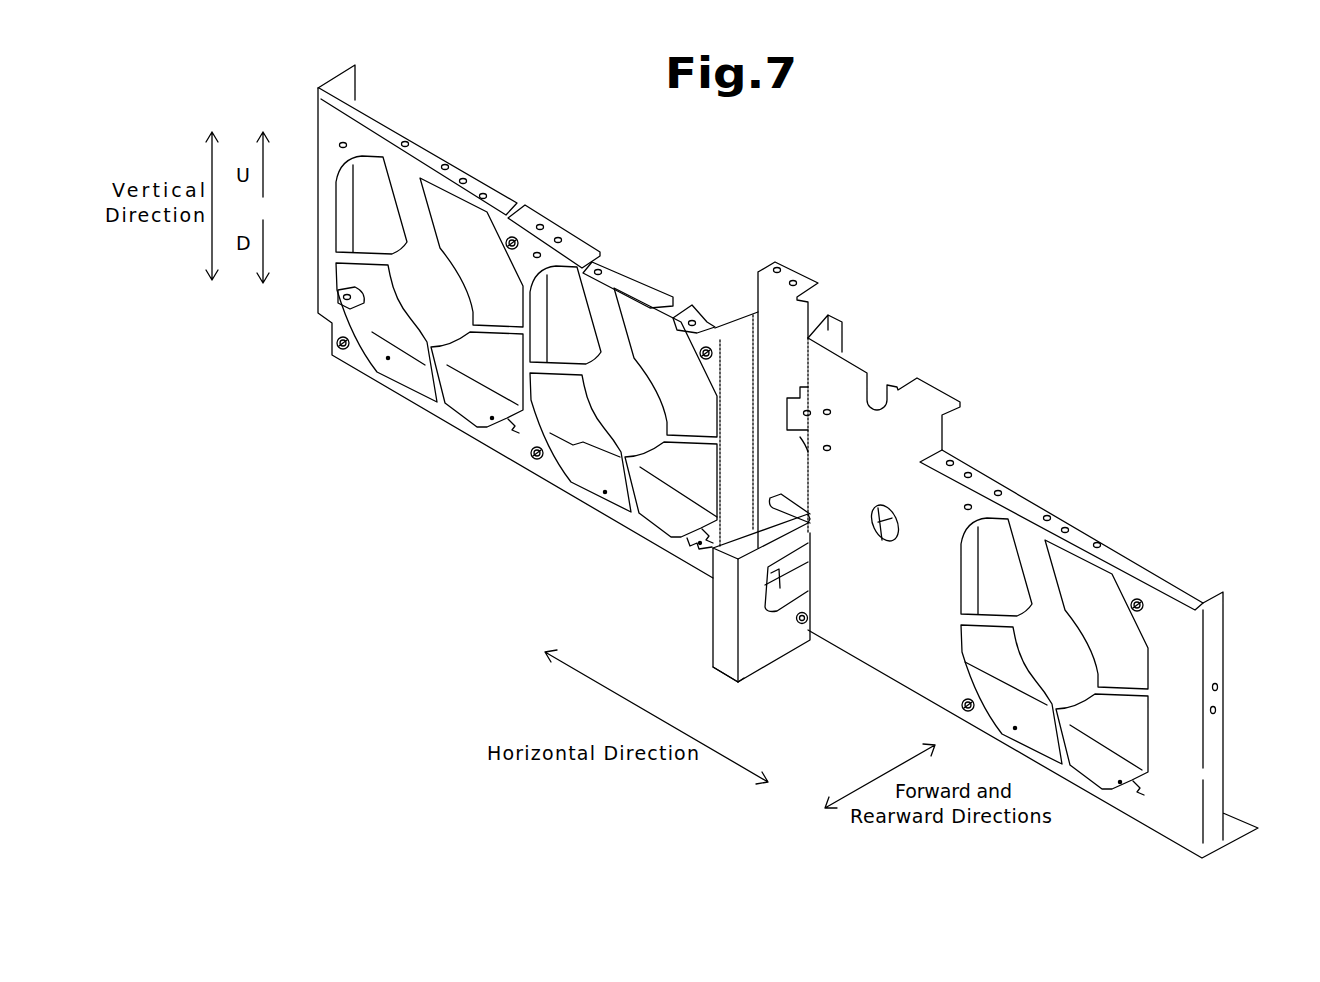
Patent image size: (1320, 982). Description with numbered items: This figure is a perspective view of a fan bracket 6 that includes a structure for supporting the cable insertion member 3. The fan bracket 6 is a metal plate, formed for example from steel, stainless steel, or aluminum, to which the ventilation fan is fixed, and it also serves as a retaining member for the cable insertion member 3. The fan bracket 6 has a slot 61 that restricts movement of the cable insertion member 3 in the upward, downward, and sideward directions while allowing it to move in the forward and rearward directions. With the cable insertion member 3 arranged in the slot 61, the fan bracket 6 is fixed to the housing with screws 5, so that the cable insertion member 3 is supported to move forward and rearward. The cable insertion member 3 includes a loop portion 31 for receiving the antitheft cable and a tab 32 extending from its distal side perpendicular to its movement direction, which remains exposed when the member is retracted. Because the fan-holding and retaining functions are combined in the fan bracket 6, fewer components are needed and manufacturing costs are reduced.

The cable insertion member 3 is at (739, 632).
The screws 5 is at (812, 618).
The fan bracket 6 is at (850, 362).
The loop portion 31 is at (778, 613).
The tab 32 is at (745, 695).
The slot 61 is at (771, 498).